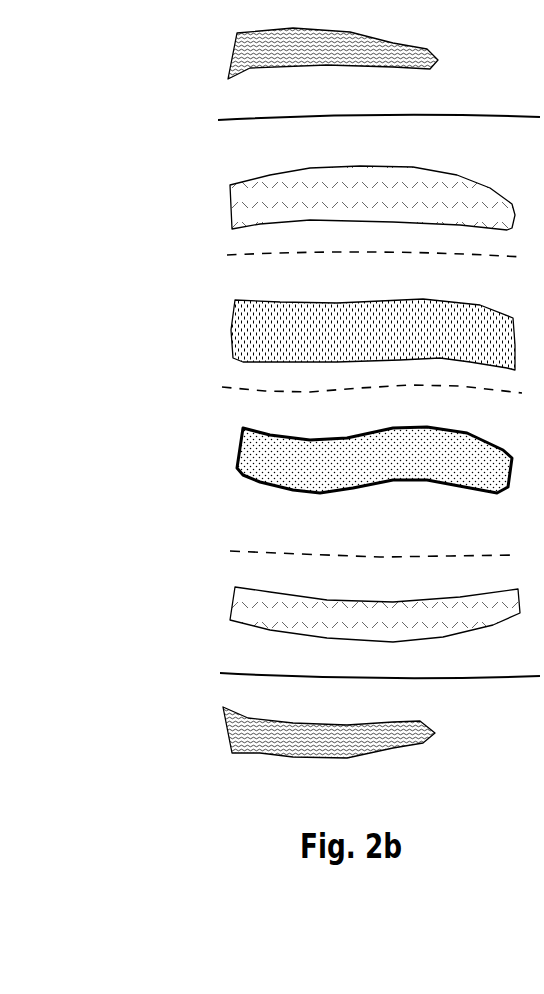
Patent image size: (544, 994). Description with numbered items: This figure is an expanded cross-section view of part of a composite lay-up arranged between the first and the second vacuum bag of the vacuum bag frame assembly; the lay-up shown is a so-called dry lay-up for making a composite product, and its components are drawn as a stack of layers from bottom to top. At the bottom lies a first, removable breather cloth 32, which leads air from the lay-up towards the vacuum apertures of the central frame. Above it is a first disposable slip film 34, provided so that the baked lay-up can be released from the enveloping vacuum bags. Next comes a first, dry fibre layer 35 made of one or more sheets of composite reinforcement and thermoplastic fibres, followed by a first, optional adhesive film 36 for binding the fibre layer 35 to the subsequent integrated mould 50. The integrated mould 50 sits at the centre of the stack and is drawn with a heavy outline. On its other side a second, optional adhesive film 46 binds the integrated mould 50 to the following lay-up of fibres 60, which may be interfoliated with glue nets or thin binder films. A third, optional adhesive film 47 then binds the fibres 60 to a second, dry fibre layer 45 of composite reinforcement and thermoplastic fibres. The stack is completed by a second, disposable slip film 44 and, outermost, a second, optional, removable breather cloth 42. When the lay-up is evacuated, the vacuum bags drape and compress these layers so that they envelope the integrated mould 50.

The second breather cloth 42 is at (308, 56).
The second slip film 44 is at (359, 127).
The second dry fibre layer 45 is at (346, 198).
The second adhesive film 46 is at (350, 260).
The lay-up of fibres 60 is at (345, 334).
The third adhesive film 47 is at (349, 392).
The integrated mould 50 is at (342, 460).
The first adhesive film 36 is at (344, 545).
The first dry fibre layer 35 is at (346, 612).
The first slip film 34 is at (355, 672).
The first breather cloth 32 is at (301, 732).